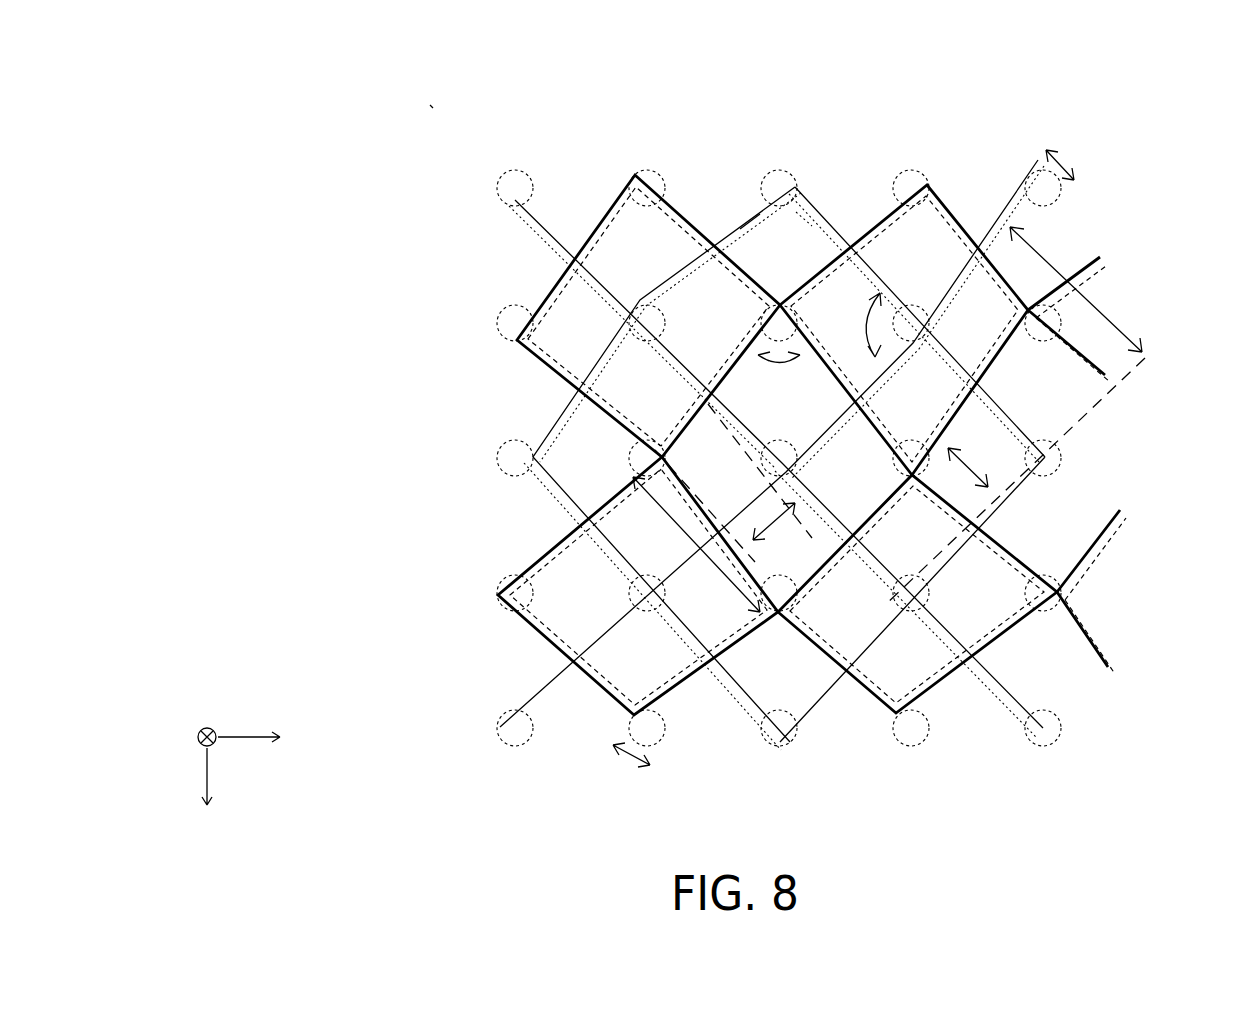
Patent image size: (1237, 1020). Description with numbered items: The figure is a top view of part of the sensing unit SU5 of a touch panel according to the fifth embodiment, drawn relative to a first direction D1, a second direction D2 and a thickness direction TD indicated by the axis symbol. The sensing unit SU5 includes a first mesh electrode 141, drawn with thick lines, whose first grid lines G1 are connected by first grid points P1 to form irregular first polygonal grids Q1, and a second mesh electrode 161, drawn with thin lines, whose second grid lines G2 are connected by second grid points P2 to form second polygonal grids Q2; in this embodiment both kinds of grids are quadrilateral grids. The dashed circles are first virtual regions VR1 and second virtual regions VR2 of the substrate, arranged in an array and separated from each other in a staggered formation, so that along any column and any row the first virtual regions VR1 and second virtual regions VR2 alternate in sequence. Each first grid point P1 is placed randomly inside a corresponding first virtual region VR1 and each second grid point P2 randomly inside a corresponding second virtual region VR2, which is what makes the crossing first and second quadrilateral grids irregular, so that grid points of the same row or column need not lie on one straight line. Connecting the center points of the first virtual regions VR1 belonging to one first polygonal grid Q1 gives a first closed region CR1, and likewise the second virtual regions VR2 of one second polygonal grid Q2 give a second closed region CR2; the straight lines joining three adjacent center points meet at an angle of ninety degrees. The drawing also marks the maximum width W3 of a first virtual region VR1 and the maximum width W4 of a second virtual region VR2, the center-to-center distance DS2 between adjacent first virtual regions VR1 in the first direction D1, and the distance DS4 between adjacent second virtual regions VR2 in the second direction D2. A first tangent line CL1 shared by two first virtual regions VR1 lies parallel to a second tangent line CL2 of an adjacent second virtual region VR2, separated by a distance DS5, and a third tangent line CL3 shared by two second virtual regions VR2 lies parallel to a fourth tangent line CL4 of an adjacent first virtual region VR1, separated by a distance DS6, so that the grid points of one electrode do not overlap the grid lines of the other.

The sensing unit SU5 is at (422, 96).
The first mesh electrode 141 is at (698, 86).
The first grid point P1 is at (638, 176).
The first grid line G1 is at (690, 213).
The second mesh electrode 161 is at (400, 219).
The second grid point P2 is at (630, 312).
The second grid line G2 is at (548, 238).
The first virtual region VR1 is at (500, 590).
The second virtual region VR2 is at (513, 172).
The first closed region CR1 is at (870, 480).
The second closed region CR2 is at (803, 218).
The first polygonal grid Q1 is at (830, 567).
The second polygonal grid Q2 is at (748, 228).
The first tangent line CL1 is at (650, 443).
The second tangent line CL2 is at (740, 437).
The third tangent line CL3 is at (1012, 490).
The fourth tangent line CL4 is at (960, 435).
The distance between center points of adjacent first virtual regions in the first di DS2 is at (690, 544).
The distance between center points of adjacent second virtual regions in the second DS4 is at (1083, 289).
The distance between second tangent line and first tangent line DS5 is at (789, 528).
The distance between fourth tangent line and third tangent line DS6 is at (982, 460).
The maximum width of first virtual region W3 is at (619, 766).
The maximum width of second virtual region W4 is at (1078, 158).
The thickness direction TD is at (200, 716).
The first direction D1 is at (269, 737).
The second direction D2 is at (204, 797).